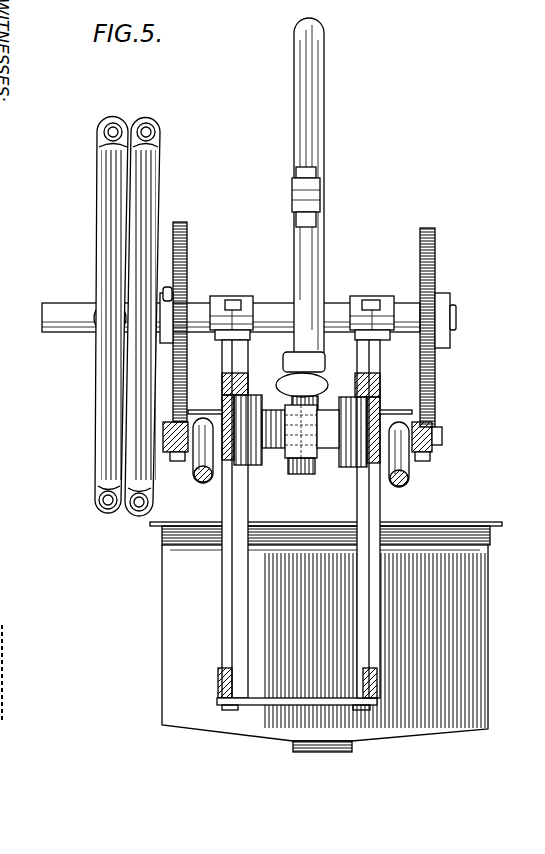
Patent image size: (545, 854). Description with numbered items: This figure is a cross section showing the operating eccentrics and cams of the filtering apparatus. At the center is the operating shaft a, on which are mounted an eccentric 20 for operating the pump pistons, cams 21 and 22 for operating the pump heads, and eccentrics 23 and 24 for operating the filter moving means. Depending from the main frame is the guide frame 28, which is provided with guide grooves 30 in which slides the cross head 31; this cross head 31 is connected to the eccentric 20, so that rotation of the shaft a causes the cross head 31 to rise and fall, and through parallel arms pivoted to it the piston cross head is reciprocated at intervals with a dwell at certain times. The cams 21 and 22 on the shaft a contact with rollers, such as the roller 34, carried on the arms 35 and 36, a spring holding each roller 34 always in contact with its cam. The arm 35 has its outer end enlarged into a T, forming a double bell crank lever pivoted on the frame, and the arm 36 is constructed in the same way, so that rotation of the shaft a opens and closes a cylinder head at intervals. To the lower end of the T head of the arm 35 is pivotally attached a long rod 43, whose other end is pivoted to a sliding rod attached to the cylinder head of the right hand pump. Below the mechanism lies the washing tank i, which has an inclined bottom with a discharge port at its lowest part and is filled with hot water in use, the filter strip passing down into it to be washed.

The eccentric 20 is at (322, 250).
The cam 21 is at (436, 378).
The cam 22 is at (188, 254).
The eccentric 23 is at (161, 178).
The eccentric 24 is at (100, 182).
The guide frame 28 is at (382, 508).
The guide grooves 30 is at (242, 590).
The cross head 31 is at (337, 450).
The roller 34 is at (178, 461).
The arm 35 is at (443, 435).
The arm 36 is at (166, 438).
The long rod 43 is at (424, 480).
The operating shaft a is at (50, 303).
The washing tank i is at (475, 643).